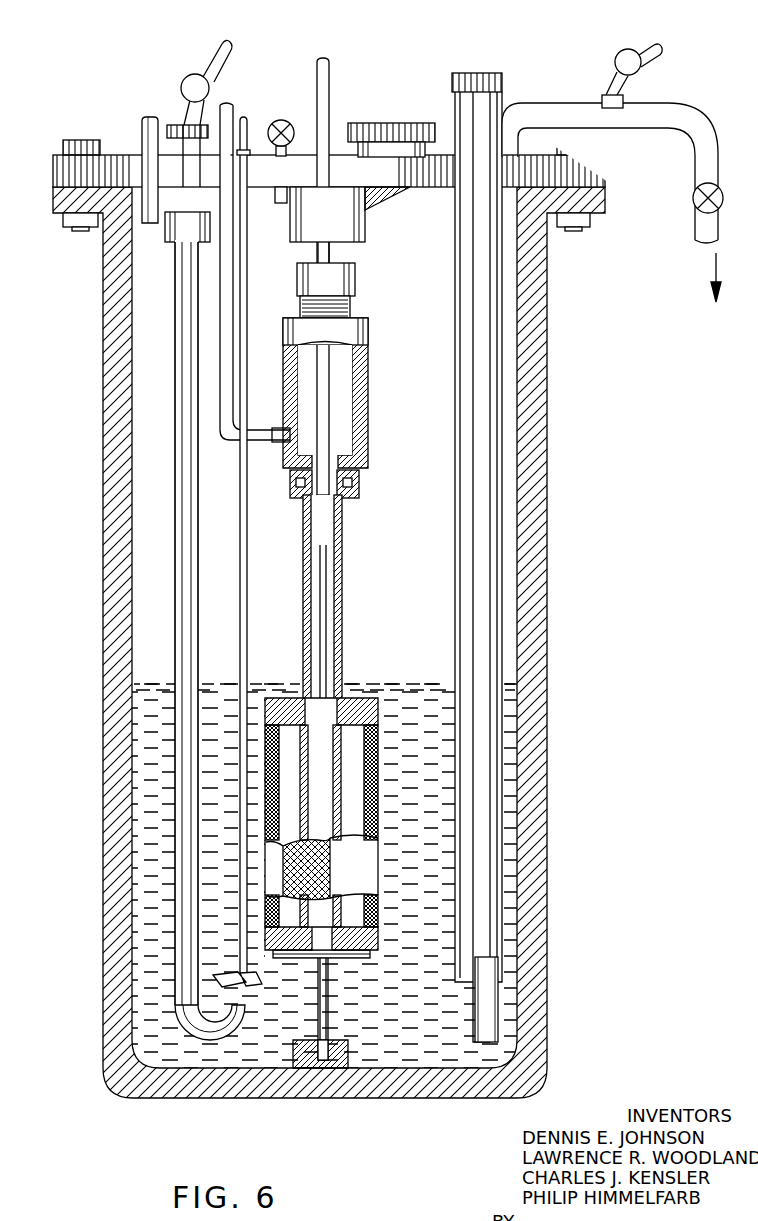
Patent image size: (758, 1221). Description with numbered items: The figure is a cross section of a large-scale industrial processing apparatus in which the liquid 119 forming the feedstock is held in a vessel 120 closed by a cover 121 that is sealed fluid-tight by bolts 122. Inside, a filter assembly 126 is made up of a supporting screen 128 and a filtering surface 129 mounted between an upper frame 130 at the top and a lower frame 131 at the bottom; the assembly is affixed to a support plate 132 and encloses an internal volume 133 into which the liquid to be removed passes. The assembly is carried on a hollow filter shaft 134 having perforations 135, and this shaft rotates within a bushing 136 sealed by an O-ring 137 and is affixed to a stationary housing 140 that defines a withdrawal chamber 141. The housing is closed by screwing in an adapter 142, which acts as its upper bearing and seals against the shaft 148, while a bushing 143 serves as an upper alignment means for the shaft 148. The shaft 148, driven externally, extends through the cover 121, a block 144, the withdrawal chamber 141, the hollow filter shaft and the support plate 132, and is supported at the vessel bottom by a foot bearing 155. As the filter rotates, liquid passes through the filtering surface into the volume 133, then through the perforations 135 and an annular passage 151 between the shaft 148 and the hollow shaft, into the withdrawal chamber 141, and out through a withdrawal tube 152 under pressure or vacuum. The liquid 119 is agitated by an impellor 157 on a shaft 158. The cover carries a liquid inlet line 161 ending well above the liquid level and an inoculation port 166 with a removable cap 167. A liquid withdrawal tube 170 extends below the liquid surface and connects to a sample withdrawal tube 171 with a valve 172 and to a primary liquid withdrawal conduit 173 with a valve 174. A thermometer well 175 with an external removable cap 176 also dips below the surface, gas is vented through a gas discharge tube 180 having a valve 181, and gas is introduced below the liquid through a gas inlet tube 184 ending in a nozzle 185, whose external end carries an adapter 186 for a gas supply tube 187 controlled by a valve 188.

The liquid 119 is at (428, 831).
The vessel 120 is at (540, 606).
The cover 121 is at (598, 180).
The bolts 122 is at (588, 228).
The filter assembly 126 is at (383, 783).
The supporting screen 128 is at (380, 800).
The filtering surface 129 is at (380, 818).
The upper frame 130 is at (380, 700).
The lower frame 131 is at (378, 940).
The support plate 132 is at (362, 955).
The internal volume 133 is at (362, 766).
The hollow filter shaft 134 is at (341, 593).
The perforations 135 is at (341, 746).
The bushing 136 is at (360, 487).
The O-ring 137 is at (358, 475).
The stationary housing 140 is at (367, 423).
The withdrawal chamber 141 is at (355, 393).
The adapter 142 is at (352, 309).
The bushing 143 is at (357, 283).
The block 144 is at (365, 225).
The shaft 148 is at (330, 110).
The annular passage 151 is at (331, 619).
The withdrawal tube 152 is at (262, 443).
The foot bearing 155 is at (345, 1045).
The impellor 157 is at (248, 984).
The shaft 158 is at (249, 622).
The liquid inlet line 161 is at (150, 130).
The inoculation port 166 is at (392, 147).
The removable cap 167 is at (382, 125).
The liquid withdrawal tube 170 is at (487, 436).
The sample withdrawal tube 171 is at (624, 101).
The valve 172 is at (622, 52).
The primary liquid withdrawal conduit 173 is at (700, 157).
The valve 174 is at (694, 200).
The thermometer well 175 is at (468, 558).
The removable cap 176 is at (502, 80).
The gas discharge tube 180 is at (287, 118).
The valve 181 is at (294, 116).
The gas inlet tube 184 is at (183, 398).
The nozzle 185 is at (238, 1010).
The adapter 186 is at (183, 125).
The gas supply tube 187 is at (229, 108).
The valve 188 is at (209, 82).